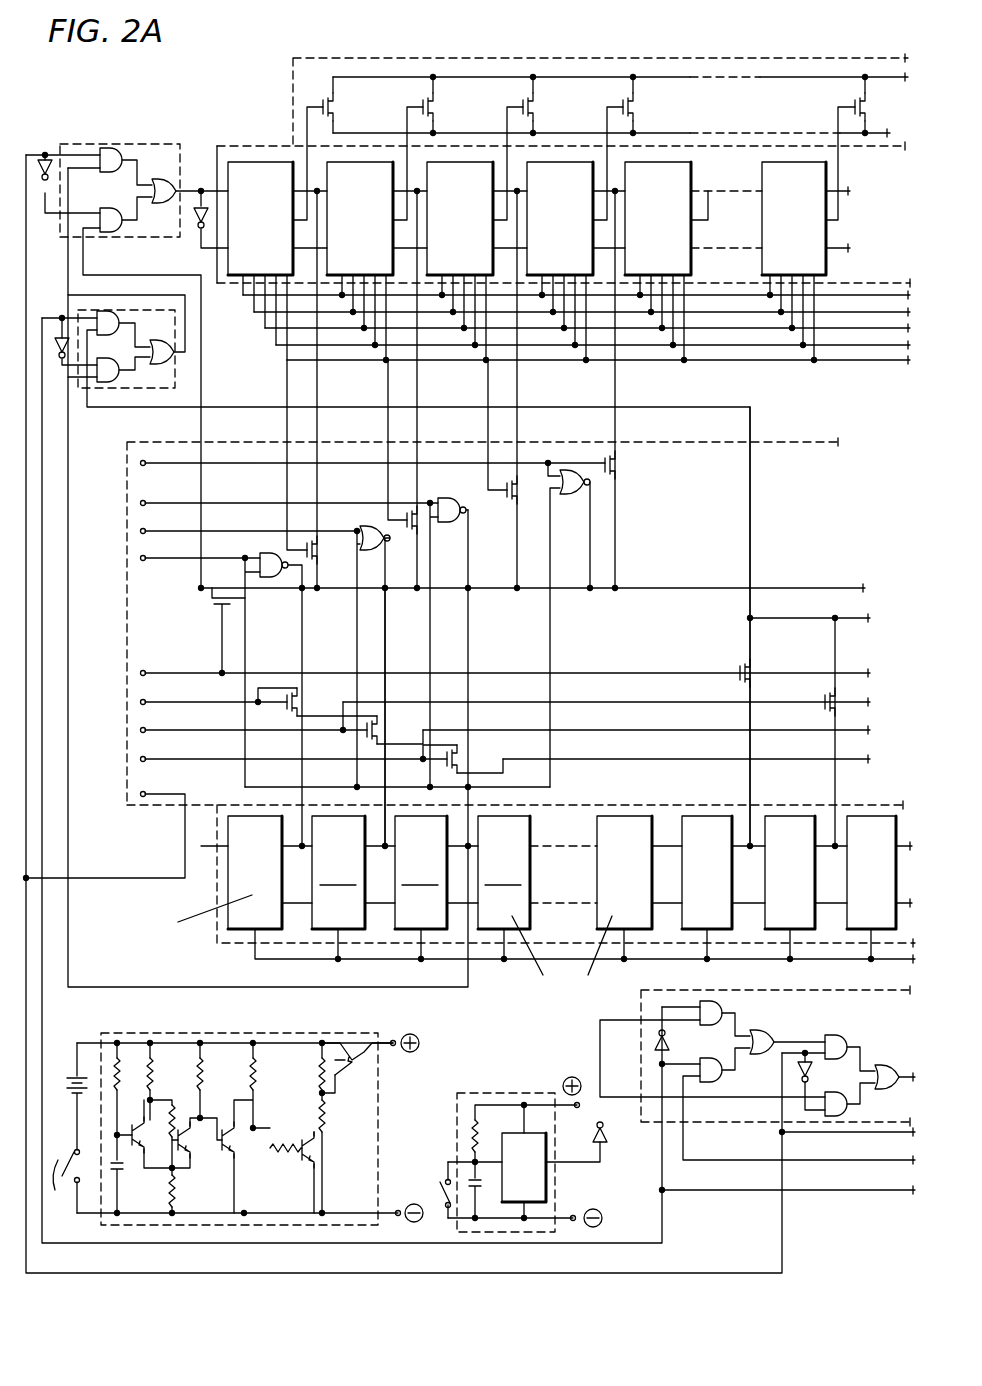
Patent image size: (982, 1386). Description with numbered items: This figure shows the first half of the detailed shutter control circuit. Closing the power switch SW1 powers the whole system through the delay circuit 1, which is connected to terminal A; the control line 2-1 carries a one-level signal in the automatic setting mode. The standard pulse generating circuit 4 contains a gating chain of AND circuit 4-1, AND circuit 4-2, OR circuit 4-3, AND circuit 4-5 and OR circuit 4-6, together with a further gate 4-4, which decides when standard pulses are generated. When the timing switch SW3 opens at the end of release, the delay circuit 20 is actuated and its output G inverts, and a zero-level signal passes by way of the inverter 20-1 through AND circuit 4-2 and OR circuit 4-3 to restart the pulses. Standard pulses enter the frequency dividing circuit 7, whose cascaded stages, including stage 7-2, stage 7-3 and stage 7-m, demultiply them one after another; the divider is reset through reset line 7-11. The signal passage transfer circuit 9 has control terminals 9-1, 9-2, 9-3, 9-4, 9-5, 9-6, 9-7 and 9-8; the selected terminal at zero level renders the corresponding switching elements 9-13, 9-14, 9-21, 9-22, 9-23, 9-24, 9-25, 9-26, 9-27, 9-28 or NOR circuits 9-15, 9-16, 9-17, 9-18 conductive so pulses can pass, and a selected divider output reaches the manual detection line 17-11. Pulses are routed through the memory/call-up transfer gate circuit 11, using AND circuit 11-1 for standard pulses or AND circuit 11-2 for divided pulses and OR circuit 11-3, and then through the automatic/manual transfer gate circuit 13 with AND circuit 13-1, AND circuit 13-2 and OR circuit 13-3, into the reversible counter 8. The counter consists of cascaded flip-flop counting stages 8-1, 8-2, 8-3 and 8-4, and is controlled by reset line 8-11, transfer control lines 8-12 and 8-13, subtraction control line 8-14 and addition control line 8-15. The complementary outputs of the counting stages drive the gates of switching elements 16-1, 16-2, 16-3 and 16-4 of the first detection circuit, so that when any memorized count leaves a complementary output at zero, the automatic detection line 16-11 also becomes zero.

The delay circuit 1 is at (172, 1030).
The control line 2-1 is at (147, 792).
The standard pulse generating circuit 4 is at (660, 992).
The AND circuit 4-1 is at (722, 1076).
The AND circuit 4-2 is at (722, 1006).
The OR circuit 4-3 is at (768, 1036).
The AND gate 4-4 is at (849, 1108).
The AND circuit 4-5 is at (836, 1034).
The OR circuit 4-6 is at (882, 1070).
The frequency dividing circuit 7 is at (217, 948).
The frequency dividing stage 7-2 is at (886, 863).
The frequency dividing stage 7-3 is at (805, 863).
The frequency dividing stage 7-m is at (270, 863).
The reset line 7-11 is at (275, 965).
The reversible counter 8 is at (236, 146).
The flip-flop counting stage 8-1 is at (275, 192).
The flip-flop counting stage 8-2 is at (374, 192).
The flip-flop counting stage 8-3 is at (474, 192).
The flip-flop counting stage 8-4 is at (574, 192).
The reset line 8-11 is at (240, 297).
The transfer control line 8-12 is at (274, 348).
The transfer control line 8-13 is at (286, 364).
The subtraction control line 8-14 is at (262, 331).
The addition control line 8-15 is at (252, 314).
The signal passage transfer circuit 9 is at (130, 442).
The control terminal 9-1 is at (147, 757).
The control terminal 9-2 is at (147, 728).
The control terminal 9-3 is at (147, 700).
The control terminal 9-4 is at (147, 671).
The control terminal 9-5 is at (147, 561).
The control terminal 9-6 is at (147, 534).
The control terminal 9-7 is at (147, 506).
The control terminal 9-8 is at (147, 466).
The switching element 9-13 is at (841, 702).
The switching element 9-14 is at (756, 673).
The NOR circuit 9-15 is at (258, 574).
The NOR circuit 9-16 is at (368, 550).
The NOR circuit 9-17 is at (450, 522).
The NOR circuit 9-18 is at (566, 494).
The switching element 9-21 is at (468, 766).
The switching element 9-22 is at (384, 736).
The switching element 9-23 is at (304, 708).
The switching element 9-24 is at (232, 606).
The switching element 9-25 is at (326, 558).
The switching element 9-26 is at (416, 530).
The switching element 9-27 is at (504, 500).
The switching element 9-28 is at (622, 467).
The memory/call-up transfer gate circuit 11 is at (389, 565).
The AND circuit 11-1 is at (131, 329).
The AND circuit 11-2 is at (119, 362).
The OR circuit 11-3 is at (52, 300).
The automatic/manual transfer gate circuit 13 is at (127, 344).
The AND circuit 13-1 is at (112, 176).
The AND circuit 13-2 is at (136, 216).
The OR circuit 13-3 is at (179, 180).
The switching element 16-1 is at (340, 107).
The switching element 16-2 is at (440, 107).
The switching element 16-3 is at (540, 107).
The switching element 16-4 is at (640, 107).
The automatic detection line 16-11 is at (782, 80).
The manual detection line 17-11 is at (636, 588).
The delay circuit 20 is at (501, 1143).
The inverter 20-1 is at (604, 1134).
The power terminal A is at (390, 1037).
The output of delay circuit G is at (592, 1170).
The power switch SW1 is at (59, 1186).
The timing switch SW3 is at (440, 1196).